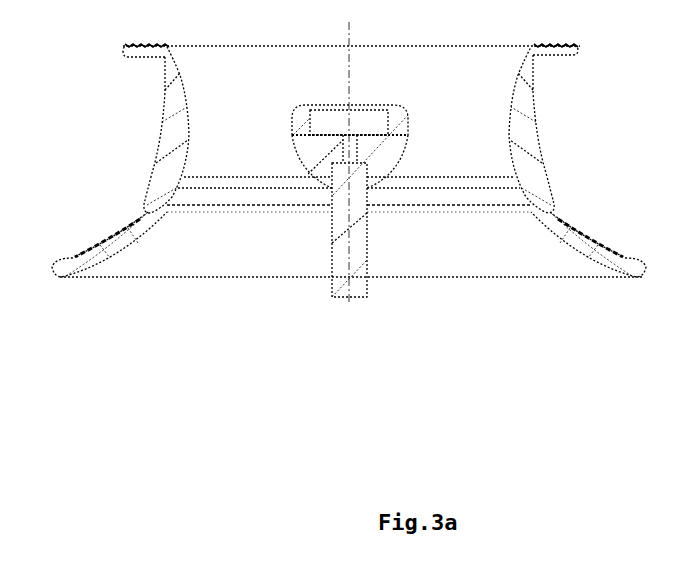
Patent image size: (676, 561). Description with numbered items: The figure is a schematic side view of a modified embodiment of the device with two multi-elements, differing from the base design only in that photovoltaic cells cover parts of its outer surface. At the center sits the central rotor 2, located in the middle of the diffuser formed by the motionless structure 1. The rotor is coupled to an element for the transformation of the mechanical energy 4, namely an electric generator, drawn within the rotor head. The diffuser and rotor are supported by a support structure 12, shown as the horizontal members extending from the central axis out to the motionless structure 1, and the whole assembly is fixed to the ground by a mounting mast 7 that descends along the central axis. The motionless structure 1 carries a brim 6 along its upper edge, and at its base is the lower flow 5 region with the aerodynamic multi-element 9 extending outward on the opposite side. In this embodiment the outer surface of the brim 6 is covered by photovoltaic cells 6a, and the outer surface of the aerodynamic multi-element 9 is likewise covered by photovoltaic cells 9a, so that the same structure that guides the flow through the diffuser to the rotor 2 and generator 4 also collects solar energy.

The motionless structure 1 is at (538, 138).
The central rotor 2 is at (327, 94).
The element for the transformation of the mechanical energy 4 is at (367, 129).
The lower flow 5 is at (132, 258).
The brim 6 is at (132, 56).
The photovoltaic cells 6a is at (130, 45).
The mounting mast 7 is at (367, 257).
The aerodynamic multi-element 9 is at (593, 261).
The photovoltaic cells 9a is at (104, 246).
The support structure 12 is at (496, 182).